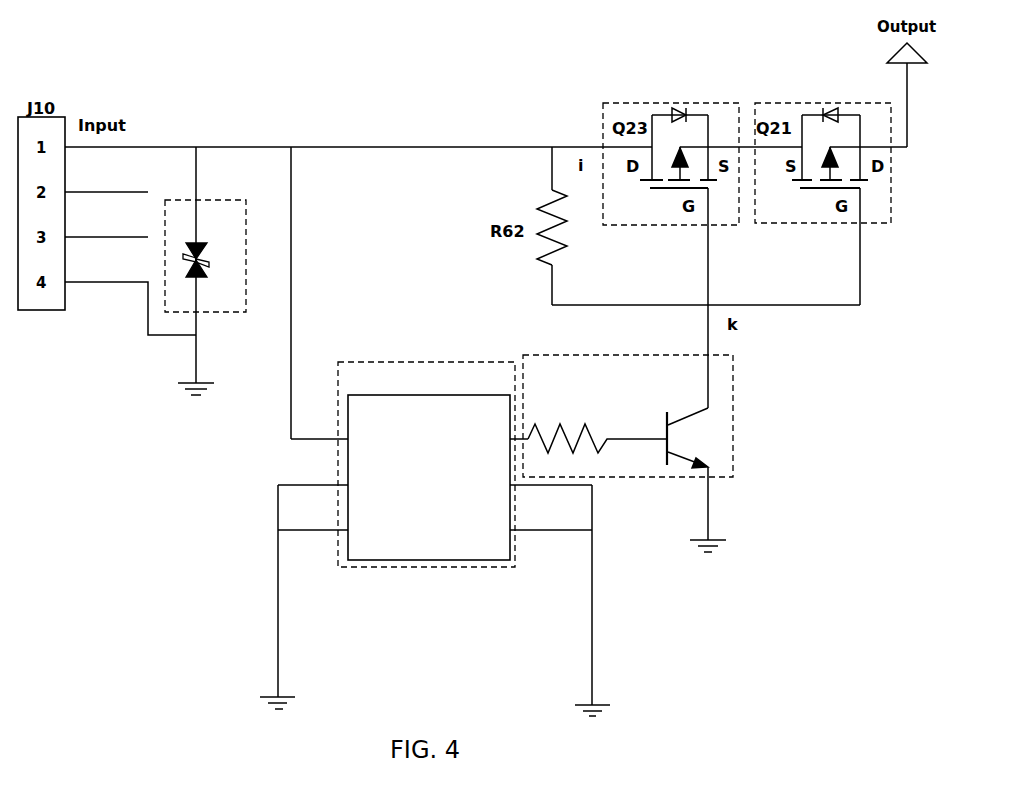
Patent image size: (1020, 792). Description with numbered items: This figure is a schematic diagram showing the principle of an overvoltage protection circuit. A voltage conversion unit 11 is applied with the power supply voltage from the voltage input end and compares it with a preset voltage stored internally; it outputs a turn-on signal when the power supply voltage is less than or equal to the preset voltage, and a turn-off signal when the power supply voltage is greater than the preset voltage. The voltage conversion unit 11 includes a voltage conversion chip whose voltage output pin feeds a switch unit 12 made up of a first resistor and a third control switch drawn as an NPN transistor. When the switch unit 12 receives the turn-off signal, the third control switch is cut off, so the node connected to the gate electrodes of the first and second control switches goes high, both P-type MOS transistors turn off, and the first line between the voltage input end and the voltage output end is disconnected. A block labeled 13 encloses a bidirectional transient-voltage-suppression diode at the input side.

The voltage conversion unit 11 is at (426, 453).
The switch unit 12 is at (657, 453).
The transient voltage suppression circuit 13 is at (213, 199).